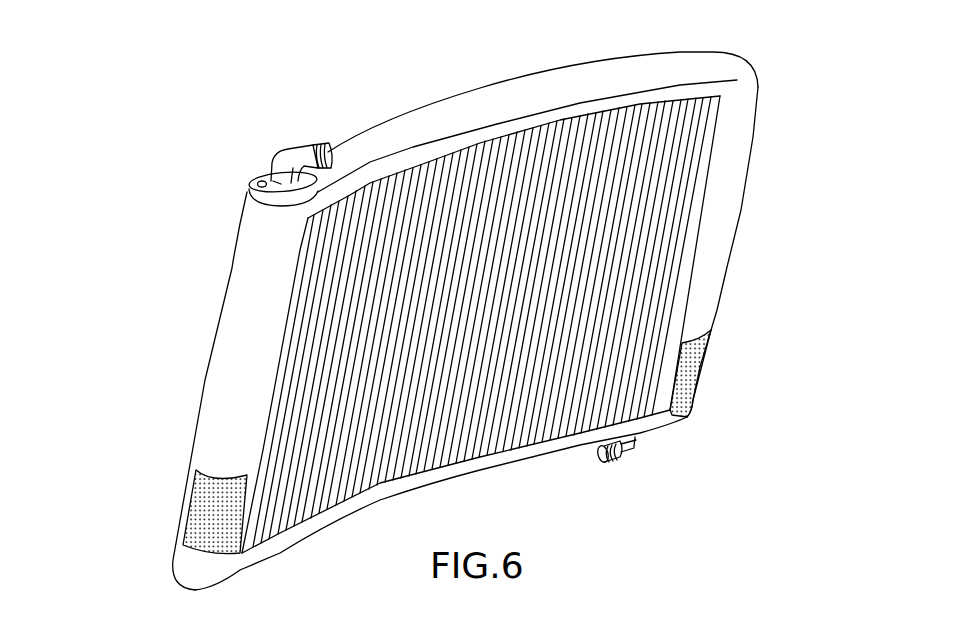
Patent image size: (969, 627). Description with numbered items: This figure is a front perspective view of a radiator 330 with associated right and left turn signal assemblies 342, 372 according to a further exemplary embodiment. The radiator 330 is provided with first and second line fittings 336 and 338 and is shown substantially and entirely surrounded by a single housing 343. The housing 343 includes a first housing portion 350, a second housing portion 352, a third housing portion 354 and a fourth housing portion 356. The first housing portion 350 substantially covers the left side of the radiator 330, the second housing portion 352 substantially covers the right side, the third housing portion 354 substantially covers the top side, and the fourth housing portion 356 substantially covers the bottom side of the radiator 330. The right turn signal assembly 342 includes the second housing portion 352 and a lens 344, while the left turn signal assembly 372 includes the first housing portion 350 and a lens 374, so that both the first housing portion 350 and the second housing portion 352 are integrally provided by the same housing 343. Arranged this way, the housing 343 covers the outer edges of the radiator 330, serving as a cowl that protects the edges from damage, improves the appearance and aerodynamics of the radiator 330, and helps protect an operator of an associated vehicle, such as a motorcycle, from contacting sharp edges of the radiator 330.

The radiator 330 is at (493, 341).
The first line fitting 336 is at (293, 154).
The second line fitting 338 is at (625, 453).
The right turn signal assembly 342 is at (139, 448).
The housing 343 is at (199, 355).
The lens 344 is at (195, 517).
The first housing portion 350 is at (786, 252).
The second housing portion 352 is at (200, 380).
The third housing portion 354 is at (387, 100).
The fourth housing portion 356 is at (514, 471).
The left turn signal assembly 372 is at (781, 346).
The lens 374 is at (700, 374).